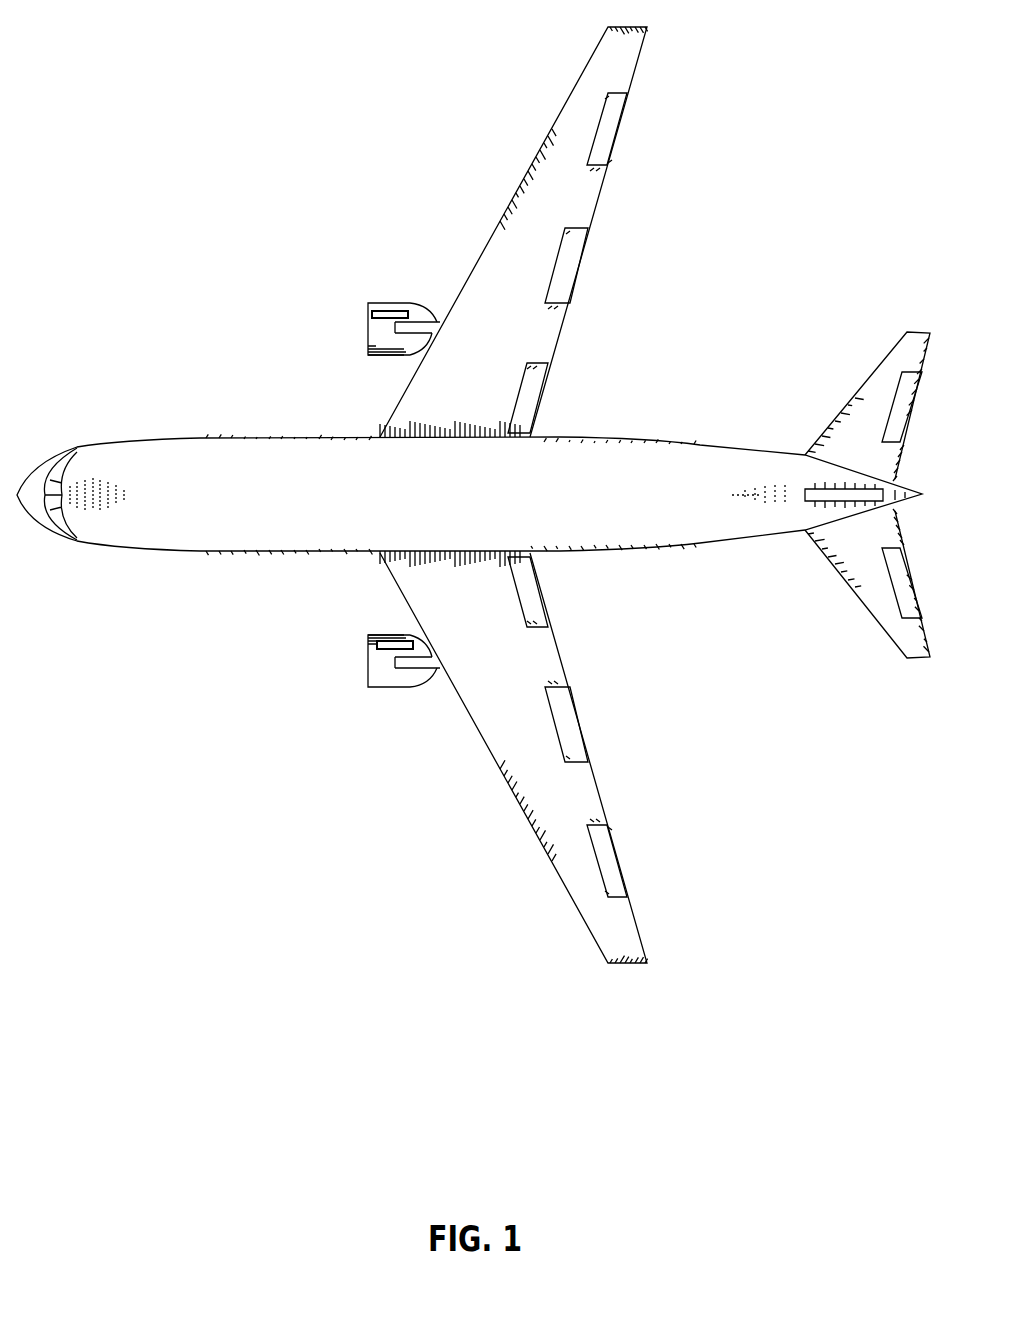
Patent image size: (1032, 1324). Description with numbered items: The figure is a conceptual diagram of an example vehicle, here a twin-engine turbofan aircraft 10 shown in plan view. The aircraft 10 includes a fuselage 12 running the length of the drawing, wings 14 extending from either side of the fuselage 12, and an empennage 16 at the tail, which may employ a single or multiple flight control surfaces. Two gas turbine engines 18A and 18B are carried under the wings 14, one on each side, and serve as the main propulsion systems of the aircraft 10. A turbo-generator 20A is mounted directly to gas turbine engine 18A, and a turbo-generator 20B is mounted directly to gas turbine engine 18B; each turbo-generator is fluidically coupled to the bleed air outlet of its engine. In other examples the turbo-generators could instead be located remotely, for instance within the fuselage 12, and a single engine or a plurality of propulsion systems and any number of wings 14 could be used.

The aircraft 10 is at (217, 170).
The fuselage 12 is at (486, 508).
The wings 14 is at (508, 345).
The empennage 16 is at (771, 577).
The gas turbine engine 18A is at (390, 300).
The gas turbine engine 18B is at (389, 687).
The turbo-generator 20A is at (401, 310).
The turbo-generator 20B is at (378, 640).